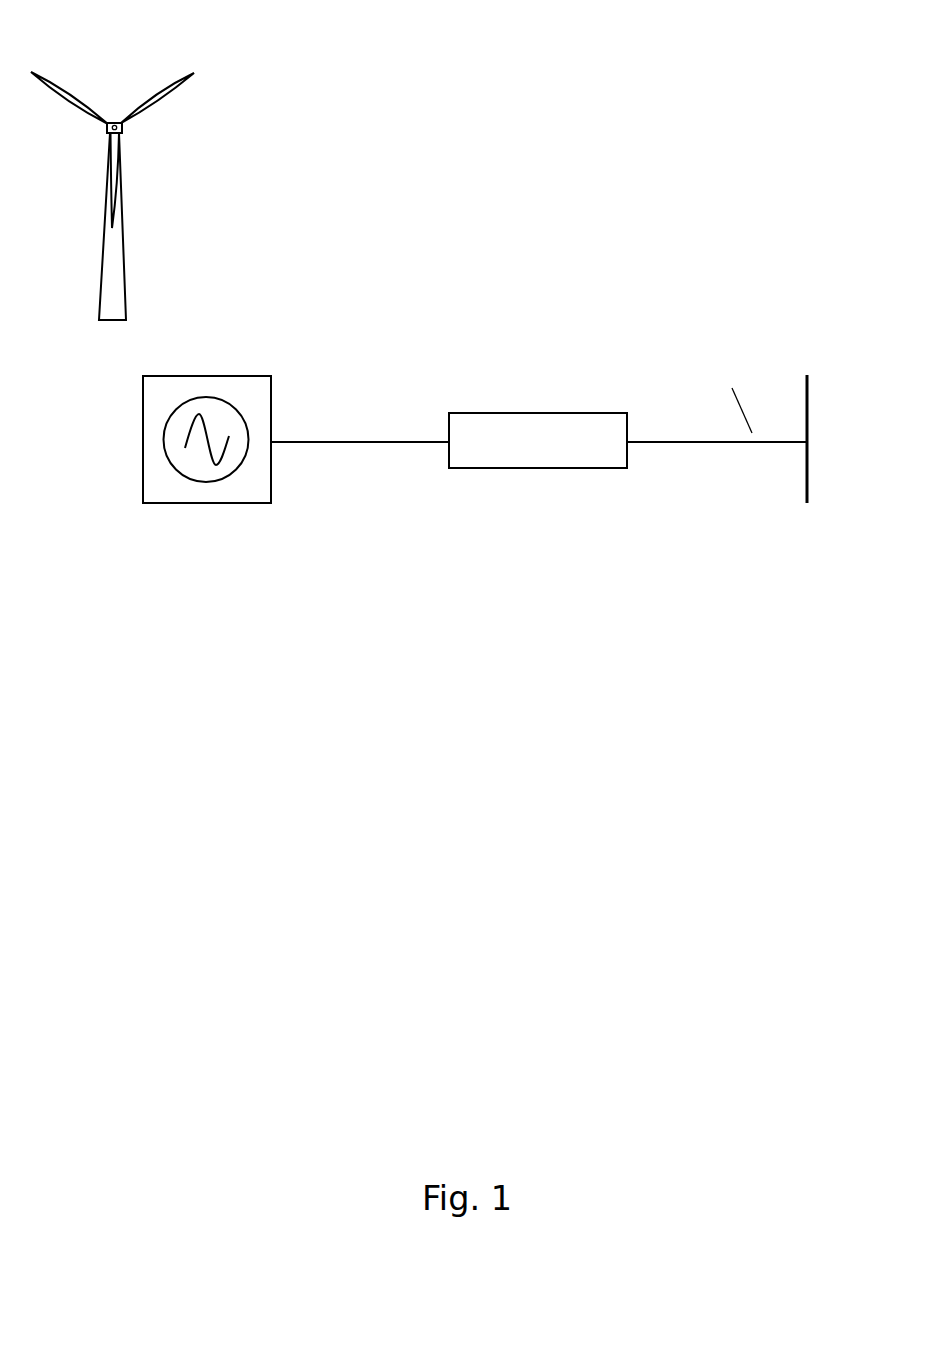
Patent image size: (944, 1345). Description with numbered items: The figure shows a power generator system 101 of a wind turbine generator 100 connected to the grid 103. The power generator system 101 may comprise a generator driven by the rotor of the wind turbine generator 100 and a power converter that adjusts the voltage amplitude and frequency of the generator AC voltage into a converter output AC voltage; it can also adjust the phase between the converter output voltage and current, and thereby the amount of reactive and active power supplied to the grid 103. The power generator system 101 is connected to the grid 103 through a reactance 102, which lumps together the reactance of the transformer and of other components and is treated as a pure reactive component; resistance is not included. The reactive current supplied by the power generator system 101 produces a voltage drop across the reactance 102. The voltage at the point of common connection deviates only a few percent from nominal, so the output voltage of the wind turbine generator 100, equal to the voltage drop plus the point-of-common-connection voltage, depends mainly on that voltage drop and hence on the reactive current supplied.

The wind turbine generator 100 is at (173, 68).
The power generator system 101 is at (222, 366).
The reactance 102 is at (532, 407).
The grid 103 is at (815, 383).